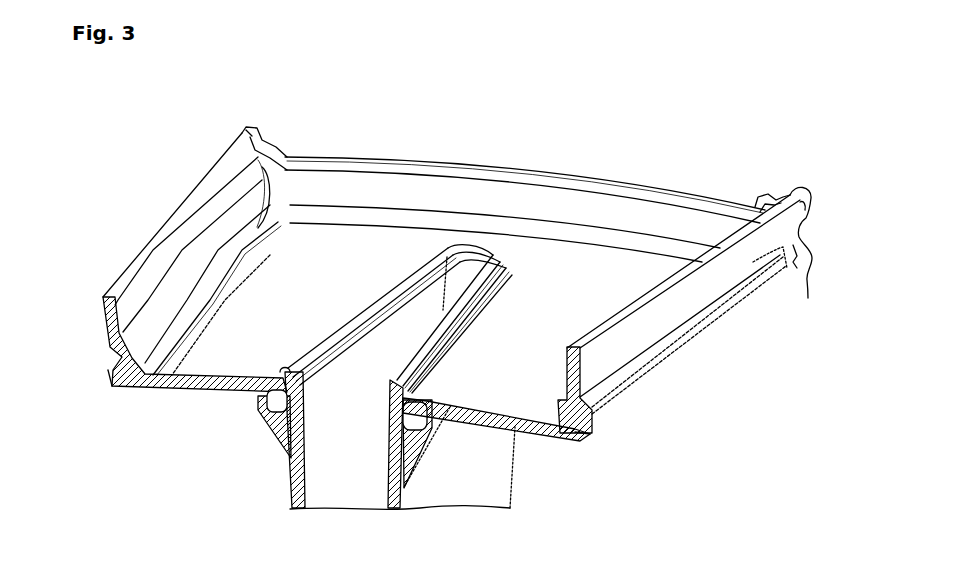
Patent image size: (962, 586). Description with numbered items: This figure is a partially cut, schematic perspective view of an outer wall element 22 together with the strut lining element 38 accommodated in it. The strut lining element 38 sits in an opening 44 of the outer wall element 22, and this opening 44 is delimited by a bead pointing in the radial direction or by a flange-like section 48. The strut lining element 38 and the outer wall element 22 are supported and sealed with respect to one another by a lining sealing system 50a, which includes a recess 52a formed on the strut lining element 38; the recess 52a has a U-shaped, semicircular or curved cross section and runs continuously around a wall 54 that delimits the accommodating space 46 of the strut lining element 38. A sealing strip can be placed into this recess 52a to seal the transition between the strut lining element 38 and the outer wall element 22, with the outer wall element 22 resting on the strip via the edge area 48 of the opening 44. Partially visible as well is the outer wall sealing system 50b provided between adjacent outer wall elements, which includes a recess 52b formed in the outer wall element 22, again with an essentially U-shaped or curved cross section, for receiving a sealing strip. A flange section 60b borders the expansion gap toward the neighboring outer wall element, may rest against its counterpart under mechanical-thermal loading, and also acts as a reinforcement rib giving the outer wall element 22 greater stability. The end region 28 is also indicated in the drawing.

The outer wall element 22 is at (565, 255).
The end flange 28 is at (797, 248).
The strut lining element 38 is at (483, 445).
The opening 44 is at (488, 253).
The accommodating space 46 is at (333, 438).
The flange-like section 48 is at (288, 373).
The lining sealing system 50a is at (260, 424).
The outer wall sealing system 50b is at (100, 362).
The recess 52a is at (285, 404).
The recess 52b is at (130, 362).
The wall 54 is at (336, 337).
The flange section 60b is at (167, 243).